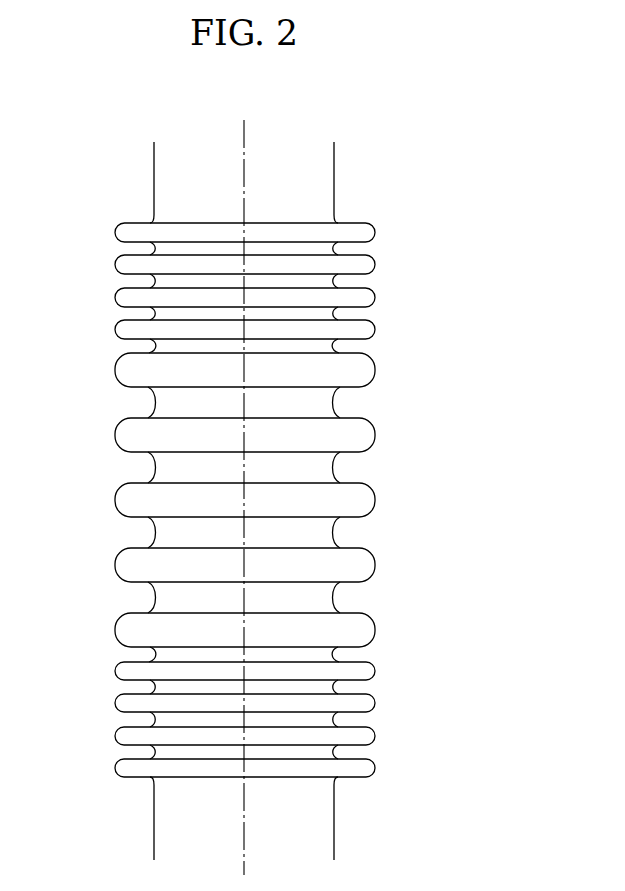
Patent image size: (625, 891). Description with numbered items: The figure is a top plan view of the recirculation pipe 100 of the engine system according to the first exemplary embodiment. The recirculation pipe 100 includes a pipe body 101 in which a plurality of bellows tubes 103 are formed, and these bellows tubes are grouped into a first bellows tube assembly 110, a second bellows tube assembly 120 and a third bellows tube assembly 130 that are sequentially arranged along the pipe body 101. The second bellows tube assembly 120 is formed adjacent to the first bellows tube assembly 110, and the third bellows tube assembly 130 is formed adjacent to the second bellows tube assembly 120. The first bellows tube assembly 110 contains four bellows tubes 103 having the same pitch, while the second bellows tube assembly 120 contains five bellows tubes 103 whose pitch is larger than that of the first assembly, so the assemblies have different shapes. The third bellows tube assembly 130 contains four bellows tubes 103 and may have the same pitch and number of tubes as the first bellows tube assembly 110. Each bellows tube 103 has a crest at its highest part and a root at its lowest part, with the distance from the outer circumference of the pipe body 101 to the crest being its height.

The recirculation pipe 100 is at (403, 142).
The pipe body 101 is at (154, 178).
The bellows tube 103 is at (115, 232).
The first bellows tube assembly 110 is at (393, 223).
The second bellows tube assembly 120 is at (393, 353).
The third bellows tube assembly 130 is at (393, 662).